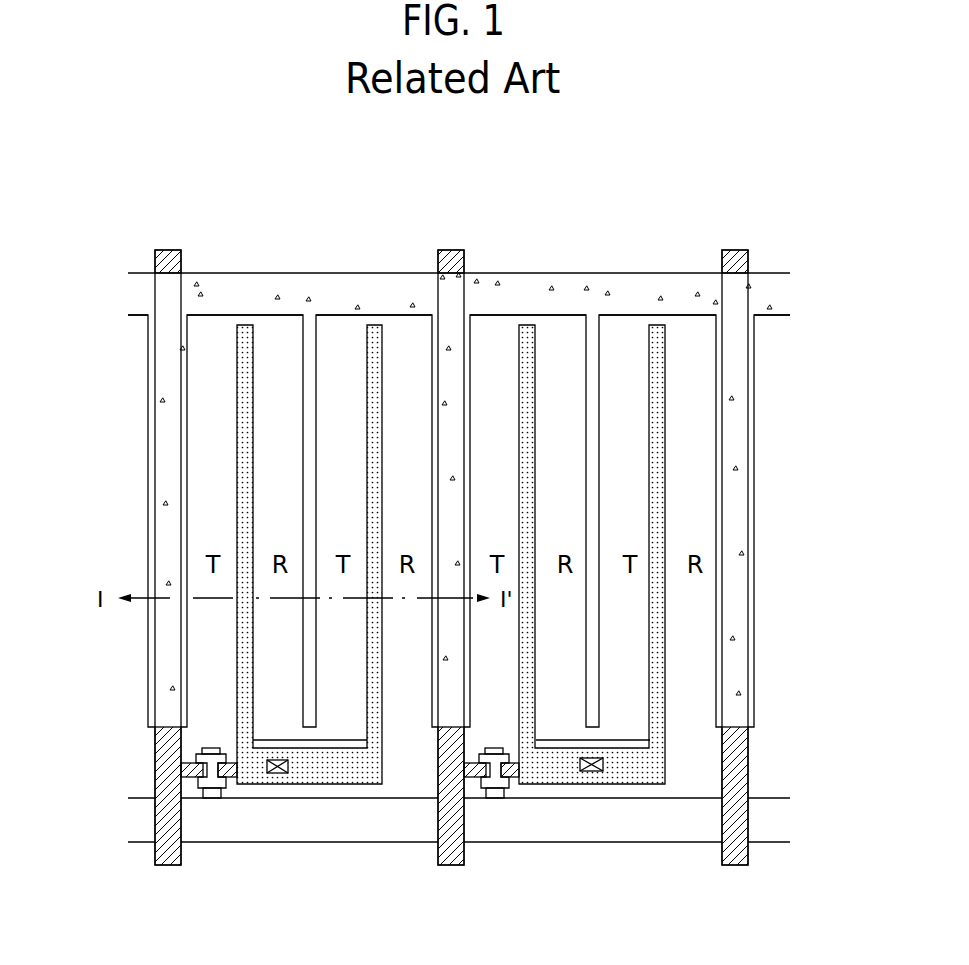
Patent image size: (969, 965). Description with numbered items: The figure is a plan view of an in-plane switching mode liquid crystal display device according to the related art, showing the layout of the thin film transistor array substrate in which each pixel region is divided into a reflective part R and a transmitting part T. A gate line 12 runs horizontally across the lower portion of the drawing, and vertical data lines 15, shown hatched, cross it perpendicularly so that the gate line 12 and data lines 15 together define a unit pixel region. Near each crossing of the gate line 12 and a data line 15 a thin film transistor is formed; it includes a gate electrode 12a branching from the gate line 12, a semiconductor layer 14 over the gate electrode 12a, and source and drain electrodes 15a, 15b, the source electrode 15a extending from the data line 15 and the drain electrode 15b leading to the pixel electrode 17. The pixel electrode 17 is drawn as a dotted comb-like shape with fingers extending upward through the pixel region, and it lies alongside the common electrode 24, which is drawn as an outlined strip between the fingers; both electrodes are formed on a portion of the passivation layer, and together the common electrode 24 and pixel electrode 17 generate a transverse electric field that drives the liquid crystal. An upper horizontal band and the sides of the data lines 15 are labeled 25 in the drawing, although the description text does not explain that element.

The gate line 12 is at (358, 822).
The gate electrode 12a is at (212, 749).
The semiconductor layer 14 is at (212, 789).
The data line 15 is at (163, 815).
The source electrode 15a is at (198, 789).
The drain electrode 15b is at (226, 780).
The pixel electrode 17 is at (247, 482).
The common electrode 24 is at (313, 433).
The common line 25 is at (214, 295).